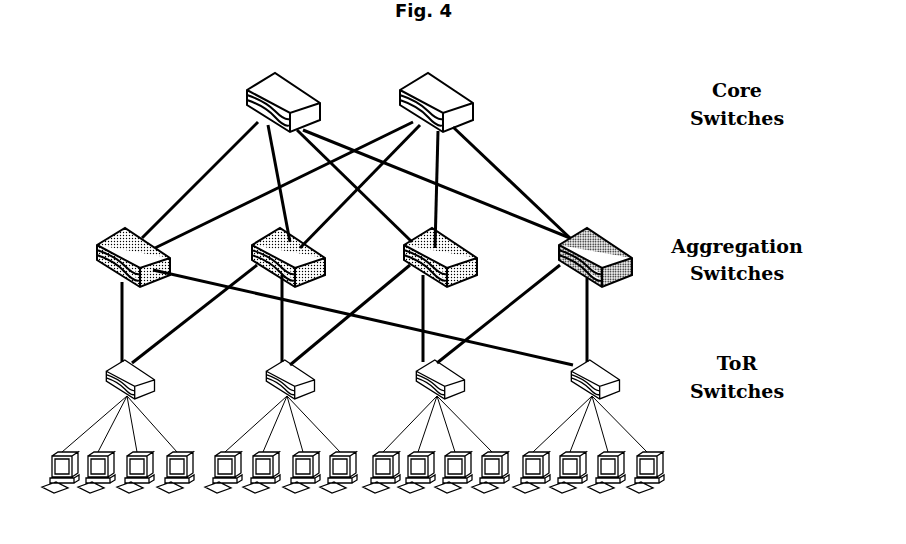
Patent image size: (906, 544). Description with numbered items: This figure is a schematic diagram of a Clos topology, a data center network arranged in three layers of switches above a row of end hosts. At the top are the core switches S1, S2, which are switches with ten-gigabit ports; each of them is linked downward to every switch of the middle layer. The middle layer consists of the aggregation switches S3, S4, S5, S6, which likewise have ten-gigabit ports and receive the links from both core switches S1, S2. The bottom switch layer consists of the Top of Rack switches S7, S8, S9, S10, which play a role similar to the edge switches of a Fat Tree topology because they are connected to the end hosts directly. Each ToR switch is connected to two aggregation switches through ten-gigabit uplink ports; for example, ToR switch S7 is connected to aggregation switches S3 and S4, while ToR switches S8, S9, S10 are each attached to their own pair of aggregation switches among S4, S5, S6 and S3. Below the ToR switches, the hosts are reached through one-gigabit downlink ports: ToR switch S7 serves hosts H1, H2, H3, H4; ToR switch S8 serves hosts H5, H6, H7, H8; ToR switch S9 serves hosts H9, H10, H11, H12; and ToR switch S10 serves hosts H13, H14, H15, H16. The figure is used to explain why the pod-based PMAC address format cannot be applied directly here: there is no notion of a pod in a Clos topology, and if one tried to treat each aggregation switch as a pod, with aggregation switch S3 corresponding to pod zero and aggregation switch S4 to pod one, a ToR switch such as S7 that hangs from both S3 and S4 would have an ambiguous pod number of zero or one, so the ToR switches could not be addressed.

The core switch S1 is at (265, 102).
The core switch S2 is at (451, 102).
The aggregation switch S3 is at (116, 257).
The aggregation switch S4 is at (270, 257).
The aggregation switch S5 is at (422, 257).
The aggregation switch S6 is at (574, 257).
The ToR switch S7 is at (112, 379).
The ToR switch S8 is at (273, 379).
The ToR switch S9 is at (424, 379).
The ToR switch S10 is at (570, 379).
The host H1 is at (60, 485).
The host H2 is at (96, 485).
The host H3 is at (135, 485).
The host H4 is at (175, 485).
The host H5 is at (223, 485).
The host H6 is at (261, 485).
The host H7 is at (301, 485).
The host H8 is at (338, 485).
The host H9 is at (381, 485).
The host H10 is at (417, 485).
The host H11 is at (455, 485).
The host H12 is at (493, 485).
The host H13 is at (532, 485).
The host H14 is at (569, 485).
The host H15 is at (608, 485).
The host H16 is at (646, 485).